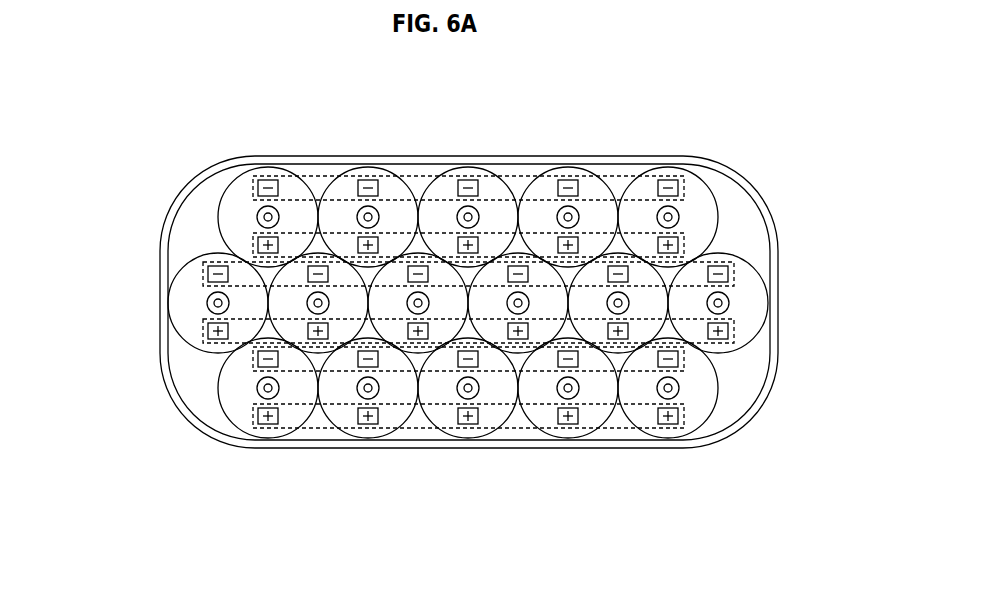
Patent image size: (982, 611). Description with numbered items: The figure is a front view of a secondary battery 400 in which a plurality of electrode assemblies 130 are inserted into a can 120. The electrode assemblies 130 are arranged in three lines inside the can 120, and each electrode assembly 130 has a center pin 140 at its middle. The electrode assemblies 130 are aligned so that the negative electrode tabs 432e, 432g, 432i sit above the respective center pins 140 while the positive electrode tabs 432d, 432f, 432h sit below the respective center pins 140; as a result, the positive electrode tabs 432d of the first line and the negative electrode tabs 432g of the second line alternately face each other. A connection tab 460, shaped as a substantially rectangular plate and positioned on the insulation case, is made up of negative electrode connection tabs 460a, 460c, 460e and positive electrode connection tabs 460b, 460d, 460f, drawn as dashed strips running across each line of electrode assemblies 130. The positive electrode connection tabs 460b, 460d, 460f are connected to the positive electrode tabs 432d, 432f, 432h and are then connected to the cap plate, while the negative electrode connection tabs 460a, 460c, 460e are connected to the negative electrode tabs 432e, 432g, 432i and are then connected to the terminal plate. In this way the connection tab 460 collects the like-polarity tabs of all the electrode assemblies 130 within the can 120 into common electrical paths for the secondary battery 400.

The secondary battery 400 is at (223, 93).
The can 120 is at (612, 165).
The electrode assemblies 130 is at (716, 217).
The center pins 140 is at (682, 217).
The positive electrode tab 432d is at (686, 246).
The negative electrode tab 432e is at (686, 187).
The positive electrode tab 432f is at (735, 330).
The negative electrode tab 432g is at (735, 272).
The positive electrode tab 432h is at (686, 418).
The negative electrode tab 432i is at (686, 360).
The connection tab 460 is at (87, 160).
The negative electrode connection tab 460a is at (250, 186).
The positive electrode connection tab 460b is at (250, 247).
The negative electrode connection tab 460c is at (203, 275).
The positive electrode connection tab 460d is at (203, 333).
The negative electrode connection tab 460e is at (250, 357).
The positive electrode connection tab 460f is at (250, 415).